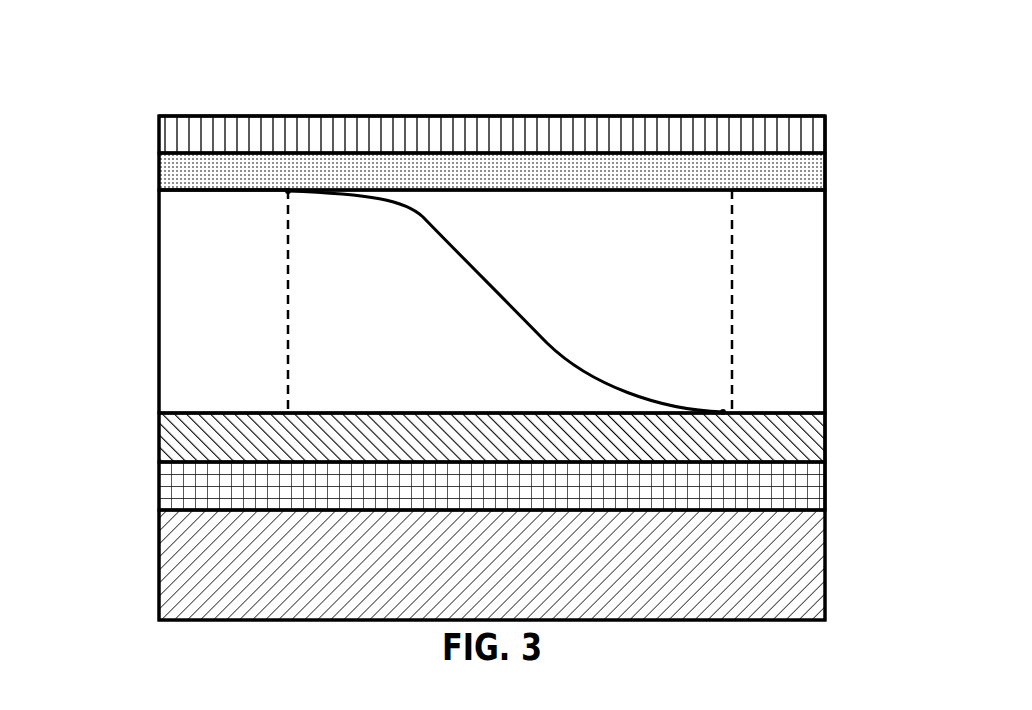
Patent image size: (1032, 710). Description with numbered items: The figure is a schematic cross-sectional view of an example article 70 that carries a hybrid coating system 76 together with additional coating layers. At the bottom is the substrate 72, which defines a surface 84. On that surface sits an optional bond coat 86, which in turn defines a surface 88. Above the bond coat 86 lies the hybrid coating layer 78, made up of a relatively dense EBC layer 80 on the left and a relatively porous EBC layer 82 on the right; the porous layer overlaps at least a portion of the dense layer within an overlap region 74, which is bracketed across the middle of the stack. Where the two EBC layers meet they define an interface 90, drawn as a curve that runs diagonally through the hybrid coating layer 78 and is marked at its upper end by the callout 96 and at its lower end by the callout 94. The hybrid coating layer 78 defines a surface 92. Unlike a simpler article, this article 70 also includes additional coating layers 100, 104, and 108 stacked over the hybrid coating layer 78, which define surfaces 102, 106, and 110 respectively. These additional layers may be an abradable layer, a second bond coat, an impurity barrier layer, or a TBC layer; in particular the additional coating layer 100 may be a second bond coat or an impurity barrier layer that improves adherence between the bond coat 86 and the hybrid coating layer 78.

The article 70 is at (84, 42).
The substrate 72 is at (173, 585).
The overlap region 74 is at (732, 116).
The hybrid coating system 76 is at (825, 116).
The hybrid coating layer 78 is at (157, 193).
The relatively dense EBC layer 80 is at (213, 225).
The relatively porous EBC layer 82 is at (760, 213).
The surface 84 is at (169, 519).
The bond coat 86 is at (817, 495).
The surface 88 is at (169, 471).
The interface 90 is at (562, 353).
The surface 92 is at (176, 186).
The lower end of interface 94 is at (737, 409).
The upper end of interface 96 is at (282, 186).
The additional coating layer 100 is at (817, 435).
The surface 102 is at (169, 421).
The additional coating layer 104 is at (816, 177).
The surface 106 is at (176, 147).
The additional coating layer 108 is at (816, 140).
The surface 110 is at (175, 114).